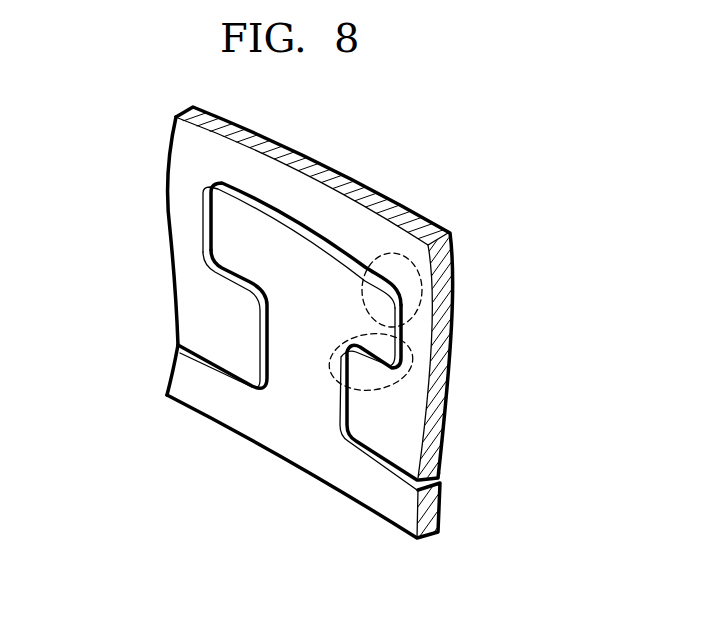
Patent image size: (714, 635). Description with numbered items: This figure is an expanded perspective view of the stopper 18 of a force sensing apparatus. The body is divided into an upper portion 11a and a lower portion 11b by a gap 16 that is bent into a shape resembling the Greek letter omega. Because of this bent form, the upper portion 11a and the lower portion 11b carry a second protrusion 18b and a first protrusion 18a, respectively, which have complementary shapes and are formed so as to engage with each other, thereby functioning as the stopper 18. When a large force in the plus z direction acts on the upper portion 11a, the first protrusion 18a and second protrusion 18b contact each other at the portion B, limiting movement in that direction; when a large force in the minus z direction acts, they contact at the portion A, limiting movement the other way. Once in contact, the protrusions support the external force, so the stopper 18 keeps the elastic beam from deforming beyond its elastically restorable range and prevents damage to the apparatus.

The upper portion 11a is at (350, 213).
The lower portion 11b is at (373, 511).
The gap 16 is at (223, 375).
The stopper 18 is at (242, 336).
The first protrusion 18a is at (223, 228).
The second protrusion 18b is at (238, 330).
The portion A is at (413, 279).
The portion B is at (413, 372).